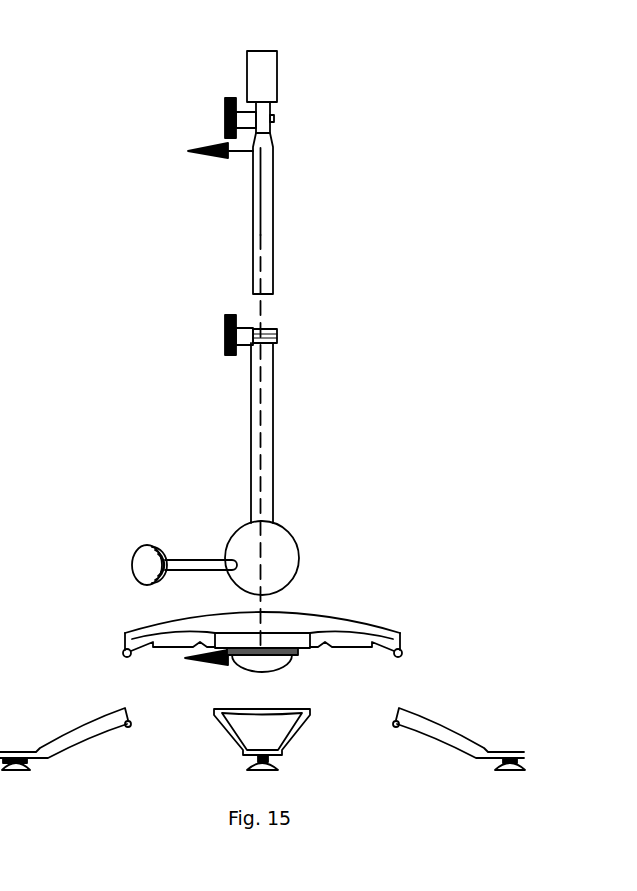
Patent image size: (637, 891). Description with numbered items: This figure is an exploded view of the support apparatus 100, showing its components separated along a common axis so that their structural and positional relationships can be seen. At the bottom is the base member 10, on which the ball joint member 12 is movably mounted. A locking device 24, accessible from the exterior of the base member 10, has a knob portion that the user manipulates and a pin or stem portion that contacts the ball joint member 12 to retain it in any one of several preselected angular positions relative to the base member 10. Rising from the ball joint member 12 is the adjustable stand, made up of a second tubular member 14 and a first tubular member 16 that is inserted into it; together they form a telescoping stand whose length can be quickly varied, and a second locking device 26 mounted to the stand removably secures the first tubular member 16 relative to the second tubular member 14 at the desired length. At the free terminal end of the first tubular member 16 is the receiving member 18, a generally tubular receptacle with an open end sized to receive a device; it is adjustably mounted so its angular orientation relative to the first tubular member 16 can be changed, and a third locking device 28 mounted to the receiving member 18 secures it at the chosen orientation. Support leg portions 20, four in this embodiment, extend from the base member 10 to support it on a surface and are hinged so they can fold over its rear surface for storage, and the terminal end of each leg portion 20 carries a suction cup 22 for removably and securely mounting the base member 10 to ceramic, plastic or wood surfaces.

The support apparatus 100 is at (82, 152).
The base member 10 is at (320, 623).
The ball joint member 12 is at (290, 532).
The second tubular member 14 is at (275, 383).
The first tubular member 16 is at (302, 197).
The receiving member 18 is at (277, 69).
The support leg portions 20 is at (78, 726).
The suction cups 22 is at (13, 772).
The locking device 24 is at (145, 543).
The locking device 26 is at (225, 337).
The locking device 28 is at (225, 105).